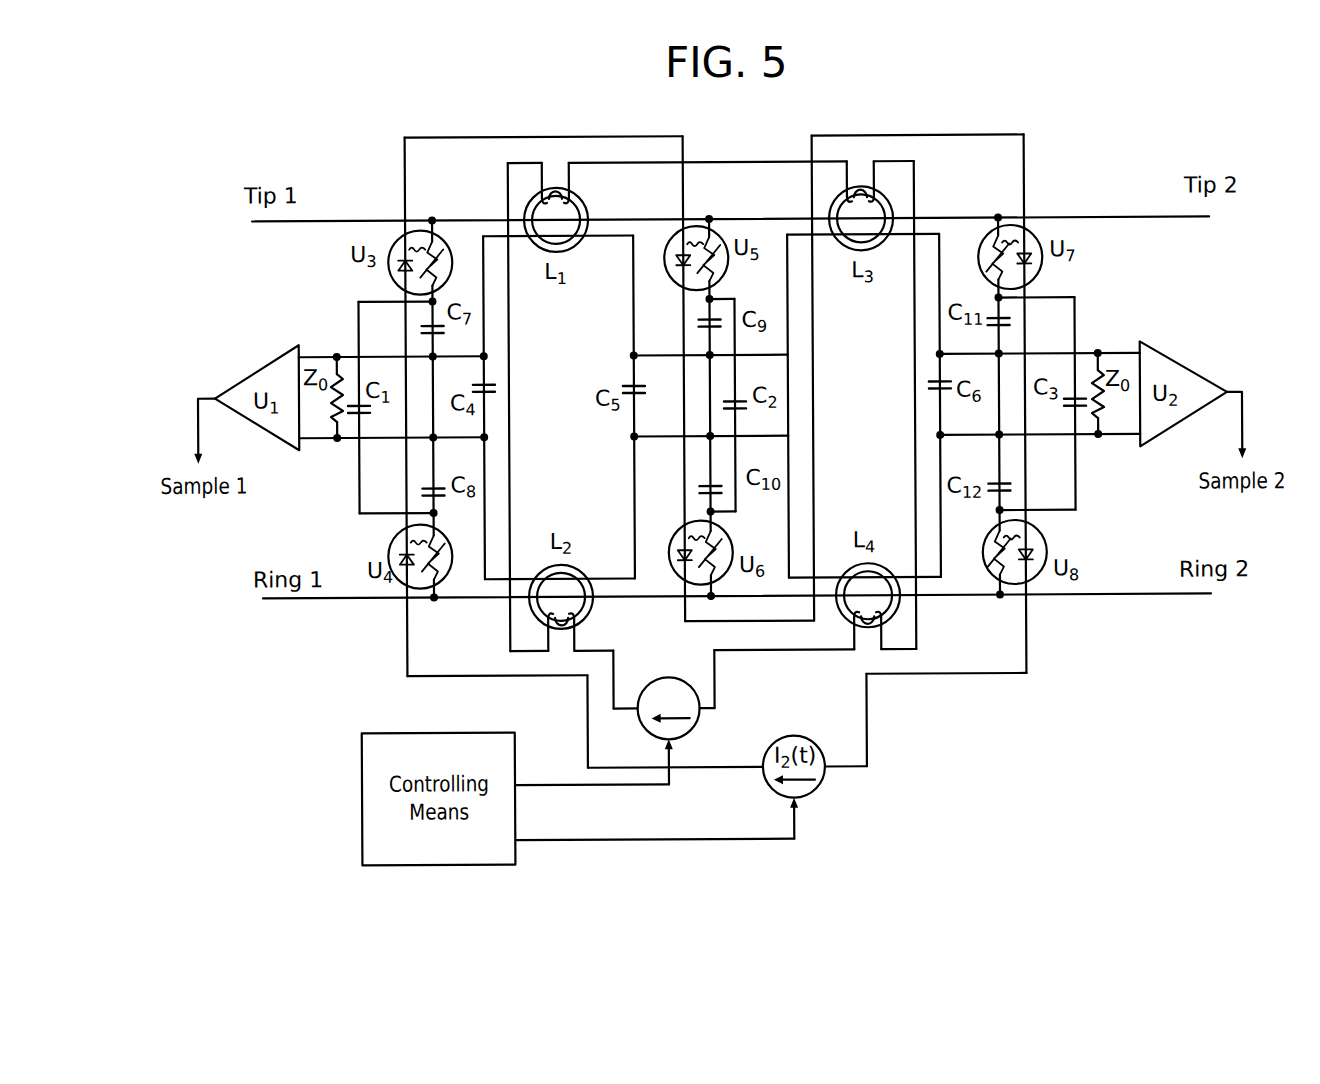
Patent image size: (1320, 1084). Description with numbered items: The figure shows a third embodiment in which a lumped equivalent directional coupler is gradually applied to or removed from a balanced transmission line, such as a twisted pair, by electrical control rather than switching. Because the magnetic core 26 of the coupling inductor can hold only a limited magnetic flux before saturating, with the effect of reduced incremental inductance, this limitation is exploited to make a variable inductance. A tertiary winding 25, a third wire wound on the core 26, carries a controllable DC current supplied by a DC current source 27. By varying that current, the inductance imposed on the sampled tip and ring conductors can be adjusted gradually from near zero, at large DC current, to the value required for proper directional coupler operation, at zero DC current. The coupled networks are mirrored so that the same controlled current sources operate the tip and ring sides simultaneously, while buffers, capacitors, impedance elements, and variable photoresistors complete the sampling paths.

The tertiary winding 25 is at (604, 162).
The core 26 is at (589, 208).
The DC current source 27 is at (666, 677).